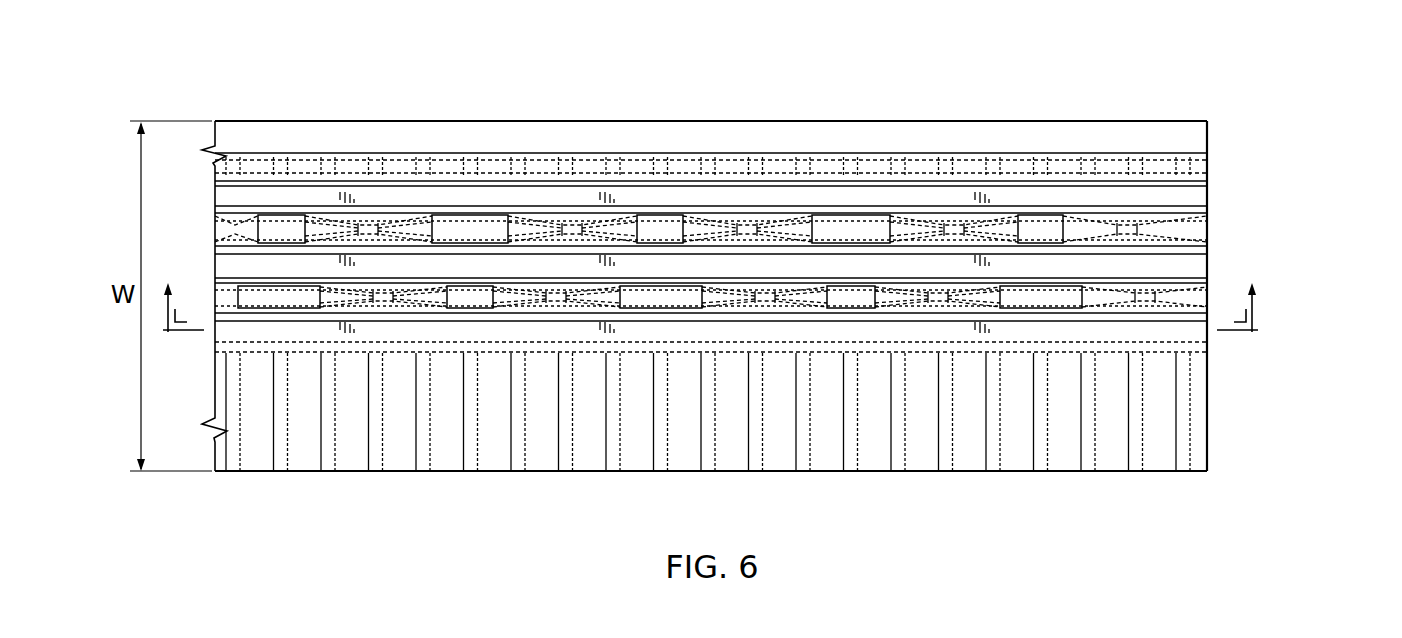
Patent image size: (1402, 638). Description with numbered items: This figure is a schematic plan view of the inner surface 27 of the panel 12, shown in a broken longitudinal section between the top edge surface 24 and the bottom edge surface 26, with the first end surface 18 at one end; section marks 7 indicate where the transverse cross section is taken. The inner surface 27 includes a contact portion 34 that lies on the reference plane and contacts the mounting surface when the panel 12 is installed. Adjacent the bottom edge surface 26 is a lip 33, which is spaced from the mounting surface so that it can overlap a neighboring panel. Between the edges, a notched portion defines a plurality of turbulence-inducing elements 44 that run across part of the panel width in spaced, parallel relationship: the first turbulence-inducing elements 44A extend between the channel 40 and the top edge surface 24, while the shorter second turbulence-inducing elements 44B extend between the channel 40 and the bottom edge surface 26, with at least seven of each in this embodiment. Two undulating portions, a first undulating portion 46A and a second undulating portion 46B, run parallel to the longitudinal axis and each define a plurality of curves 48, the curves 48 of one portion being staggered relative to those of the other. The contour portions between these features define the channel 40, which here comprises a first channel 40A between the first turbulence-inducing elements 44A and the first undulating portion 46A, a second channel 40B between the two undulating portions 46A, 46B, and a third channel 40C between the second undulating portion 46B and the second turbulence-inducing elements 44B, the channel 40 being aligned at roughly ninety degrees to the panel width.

The section line 7- 7 is at (710, 292).
The panel 12 is at (282, 65).
The first end surface 18 is at (1210, 137).
The top edge surface 24 is at (925, 472).
The bottom edge surface 26 is at (258, 121).
The inner surface 27 is at (927, 128).
The lip 33 is at (360, 128).
The contact portion 34 is at (466, 210).
The channel 40 is at (1332, 177).
The first channel 40A is at (1190, 335).
The second channel 40B is at (1192, 254).
The third channel 40C is at (1196, 202).
The turbulence-inducing element 44 is at (546, 65).
The first turbulence-inducing elements 44A is at (282, 463).
The second turbulence-inducing elements 44B is at (506, 130).
The first undulating portion 46A is at (1095, 228).
The second undulating portion 46B is at (1108, 306).
The curves 48 is at (664, 216).